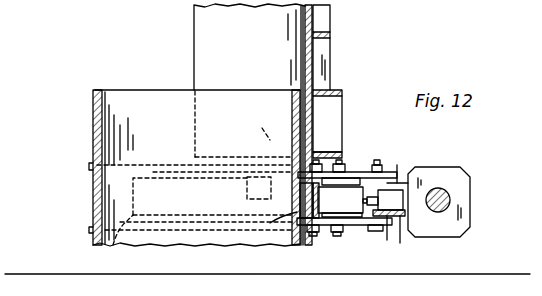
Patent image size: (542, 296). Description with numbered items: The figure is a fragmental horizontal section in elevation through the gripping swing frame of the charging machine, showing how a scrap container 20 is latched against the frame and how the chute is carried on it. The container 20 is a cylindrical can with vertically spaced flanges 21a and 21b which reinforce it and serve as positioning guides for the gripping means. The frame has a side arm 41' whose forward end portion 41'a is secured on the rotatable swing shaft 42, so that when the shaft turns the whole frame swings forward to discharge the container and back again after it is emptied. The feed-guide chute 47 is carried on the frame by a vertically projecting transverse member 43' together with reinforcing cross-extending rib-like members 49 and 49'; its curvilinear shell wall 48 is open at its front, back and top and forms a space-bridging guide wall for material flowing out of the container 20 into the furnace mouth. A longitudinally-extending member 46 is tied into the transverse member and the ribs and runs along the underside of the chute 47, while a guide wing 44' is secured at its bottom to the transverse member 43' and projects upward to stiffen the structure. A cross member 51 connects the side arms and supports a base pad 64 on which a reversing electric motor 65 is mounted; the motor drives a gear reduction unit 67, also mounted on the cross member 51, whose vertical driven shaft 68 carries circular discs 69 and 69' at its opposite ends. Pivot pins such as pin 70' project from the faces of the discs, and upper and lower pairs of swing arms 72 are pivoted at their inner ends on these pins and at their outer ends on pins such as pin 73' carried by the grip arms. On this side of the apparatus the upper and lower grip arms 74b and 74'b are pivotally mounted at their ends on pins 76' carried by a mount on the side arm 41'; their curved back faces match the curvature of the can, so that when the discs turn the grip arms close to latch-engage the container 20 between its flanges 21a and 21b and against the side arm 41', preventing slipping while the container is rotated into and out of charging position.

The container 20 is at (146, 89).
The flange 21a is at (78, 151).
The flange 21b is at (78, 215).
The side arm 41' is at (268, 200).
The forward end portion 41'a is at (465, 195).
The swing shaft 42 is at (446, 199).
The transverse member 43' is at (348, 124).
The guide wing 44' is at (194, 153).
The longitudinally-extending member 46 is at (330, 18).
The feed-guide chute 47 is at (184, 50).
The shell wall 48 is at (306, 40).
The rib-like member 49 is at (341, 44).
The rib-like member 49' is at (344, 76).
The cross member 51 is at (300, 211).
The base pad 64 is at (400, 214).
The reversing electric motor 65 is at (389, 226).
The gear reduction unit 67 is at (360, 225).
The driven shaft 68 is at (338, 188).
The disc 69 is at (340, 197).
The disc 69' is at (273, 242).
The pivot pin 70' is at (344, 247).
The swing arm 72 is at (323, 232).
The pin 73' is at (303, 229).
The grip arm 74b is at (362, 172).
The grip arm 74'b is at (422, 246).
The pin 76' is at (384, 156).